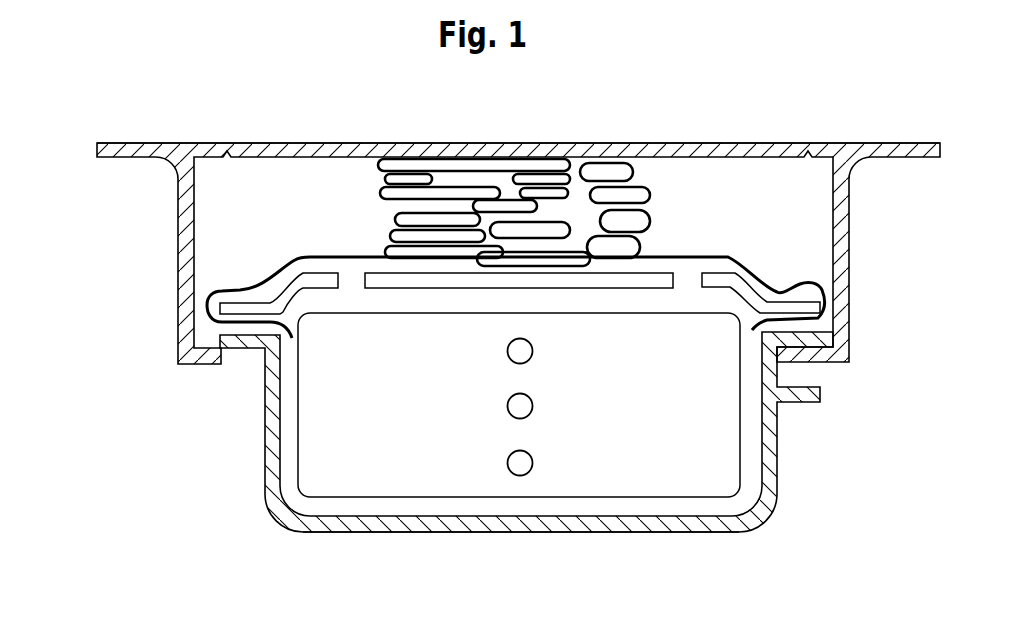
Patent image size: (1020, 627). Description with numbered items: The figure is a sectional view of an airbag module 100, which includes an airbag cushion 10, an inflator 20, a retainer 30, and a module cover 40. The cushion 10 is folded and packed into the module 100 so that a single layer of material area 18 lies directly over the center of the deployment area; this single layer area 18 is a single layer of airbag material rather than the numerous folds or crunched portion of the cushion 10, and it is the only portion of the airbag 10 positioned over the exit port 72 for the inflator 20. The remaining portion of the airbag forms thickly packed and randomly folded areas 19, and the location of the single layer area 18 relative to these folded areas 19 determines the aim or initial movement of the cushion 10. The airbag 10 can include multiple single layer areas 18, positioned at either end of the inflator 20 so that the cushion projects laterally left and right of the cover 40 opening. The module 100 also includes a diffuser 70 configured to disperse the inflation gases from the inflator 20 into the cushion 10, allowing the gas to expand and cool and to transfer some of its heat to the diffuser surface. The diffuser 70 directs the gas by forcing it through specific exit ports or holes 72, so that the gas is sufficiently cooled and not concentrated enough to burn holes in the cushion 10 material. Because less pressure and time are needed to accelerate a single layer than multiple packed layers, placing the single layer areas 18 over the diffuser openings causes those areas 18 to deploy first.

The airbag module 100 is at (100, 136).
The airbag cushion 10 is at (813, 205).
The module cover 40 is at (795, 143).
The inflator 20 is at (735, 472).
The retainer 30 is at (693, 533).
The thickly packed and randomly folded areas 19 is at (535, 159).
The single layer of material area 18 is at (351, 258).
The diffuser 70 is at (617, 290).
The exit ports or holes 72 is at (351, 288).